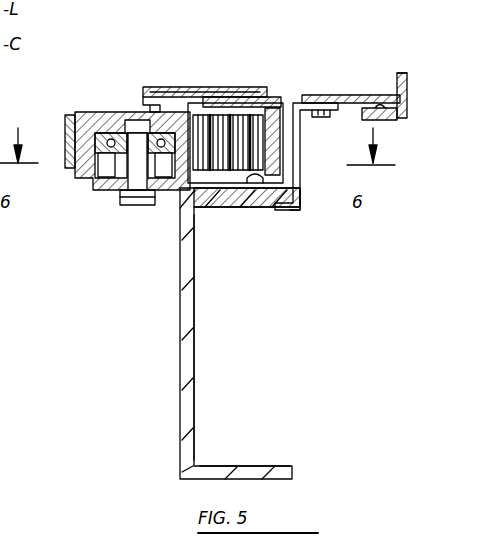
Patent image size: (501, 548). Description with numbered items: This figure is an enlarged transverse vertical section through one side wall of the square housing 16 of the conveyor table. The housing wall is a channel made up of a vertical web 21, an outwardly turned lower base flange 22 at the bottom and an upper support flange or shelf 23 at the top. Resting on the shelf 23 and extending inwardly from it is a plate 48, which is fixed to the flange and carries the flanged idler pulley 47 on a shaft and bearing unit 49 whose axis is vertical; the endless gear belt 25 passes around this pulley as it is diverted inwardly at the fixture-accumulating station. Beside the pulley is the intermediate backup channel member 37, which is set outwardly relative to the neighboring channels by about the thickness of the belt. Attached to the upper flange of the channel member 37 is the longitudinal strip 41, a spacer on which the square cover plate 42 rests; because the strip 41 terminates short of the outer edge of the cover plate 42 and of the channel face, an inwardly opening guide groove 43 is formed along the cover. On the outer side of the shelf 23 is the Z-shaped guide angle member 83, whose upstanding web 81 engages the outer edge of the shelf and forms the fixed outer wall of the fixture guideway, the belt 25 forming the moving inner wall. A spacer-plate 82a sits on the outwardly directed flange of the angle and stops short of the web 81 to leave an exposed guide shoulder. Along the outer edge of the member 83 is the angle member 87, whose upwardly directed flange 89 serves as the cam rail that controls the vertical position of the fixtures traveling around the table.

The housing 16 is at (180, 388).
The vertical web 21 is at (195, 330).
The lower base flange 22 is at (268, 467).
The upper support flange or shelf 23 is at (215, 204).
The endless gear belt 25 is at (67, 115).
The channel member 37 is at (268, 152).
The longitudinal strip 41 is at (183, 103).
The cover plate 42 is at (210, 92).
The guide groove 43 is at (267, 97).
The flanged idler pulley 47 is at (78, 180).
The plate 48 is at (160, 200).
The shaft and bearing unit 49 is at (116, 112).
The upstanding web or flange 81 is at (300, 165).
The spacer-plate 82a is at (330, 103).
The angle member 83 is at (308, 185).
The angle member 87 is at (410, 98).
The upwardly directed flange 89 is at (400, 73).